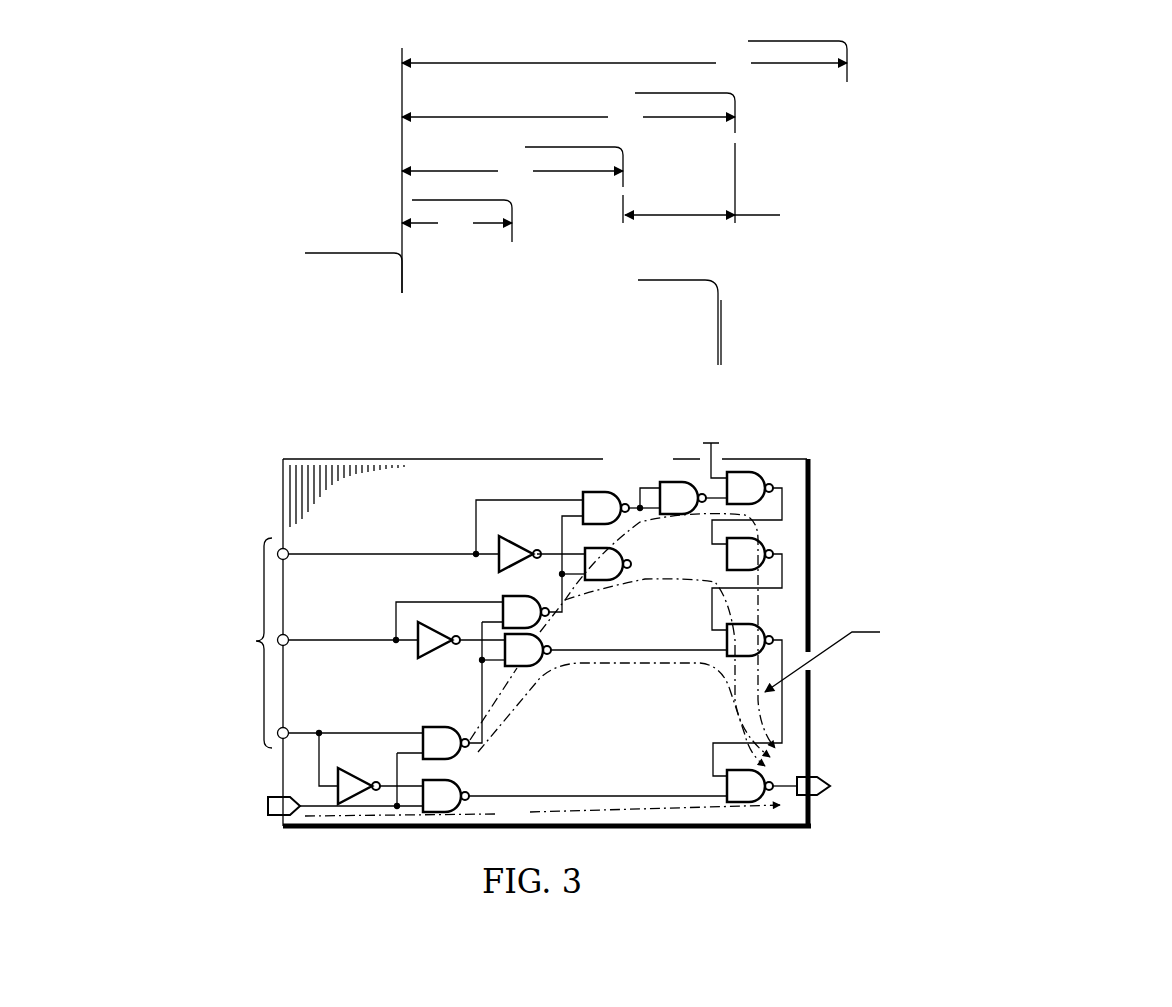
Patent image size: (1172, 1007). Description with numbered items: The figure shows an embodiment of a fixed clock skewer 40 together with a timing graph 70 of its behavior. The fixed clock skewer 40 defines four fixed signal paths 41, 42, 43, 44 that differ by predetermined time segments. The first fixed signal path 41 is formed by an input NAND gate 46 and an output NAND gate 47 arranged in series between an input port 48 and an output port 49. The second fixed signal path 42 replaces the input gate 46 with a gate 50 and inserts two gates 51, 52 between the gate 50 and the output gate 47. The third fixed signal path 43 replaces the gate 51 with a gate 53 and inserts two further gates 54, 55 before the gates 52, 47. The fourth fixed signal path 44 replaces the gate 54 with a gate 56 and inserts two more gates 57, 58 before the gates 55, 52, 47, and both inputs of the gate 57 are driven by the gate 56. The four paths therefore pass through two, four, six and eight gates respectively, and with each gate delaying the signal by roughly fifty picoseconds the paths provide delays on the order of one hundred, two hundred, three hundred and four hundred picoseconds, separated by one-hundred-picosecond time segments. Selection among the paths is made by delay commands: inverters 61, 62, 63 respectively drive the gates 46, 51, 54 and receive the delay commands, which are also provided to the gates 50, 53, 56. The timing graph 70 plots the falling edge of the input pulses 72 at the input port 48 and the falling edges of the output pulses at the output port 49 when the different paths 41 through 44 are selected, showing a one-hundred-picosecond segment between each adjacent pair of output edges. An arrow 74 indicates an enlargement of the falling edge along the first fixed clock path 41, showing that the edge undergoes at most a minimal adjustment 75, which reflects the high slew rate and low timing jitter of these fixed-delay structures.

The fixed clock skewer 40 is at (815, 548).
The first fixed signal path 41 is at (542, 513).
The second fixed signal path 42 is at (583, 456).
The third fixed signal path 43 is at (586, 425).
The fourth fixed signal path 44 is at (624, 394).
The input NAND gate 46 is at (457, 778).
The output NAND gate 47 is at (727, 783).
The input port 48 is at (278, 820).
The output port 49 is at (820, 798).
The gate 50 is at (450, 725).
The gate 51 is at (553, 647).
The gate 52 is at (727, 640).
The gate 53 is at (507, 596).
The gate 54 is at (625, 546).
The gate 55 is at (727, 558).
The gate 56 is at (598, 492).
The gate 57 is at (672, 481).
The gate 58 is at (745, 469).
The inverter 61 is at (380, 776).
The inverter 62 is at (461, 631).
The inverter 63 is at (523, 546).
The timing graph 70 is at (865, 310).
The input pulses 72 is at (405, 273).
The arrow 74 is at (645, 295).
The minimal adjustment 75 is at (723, 338).